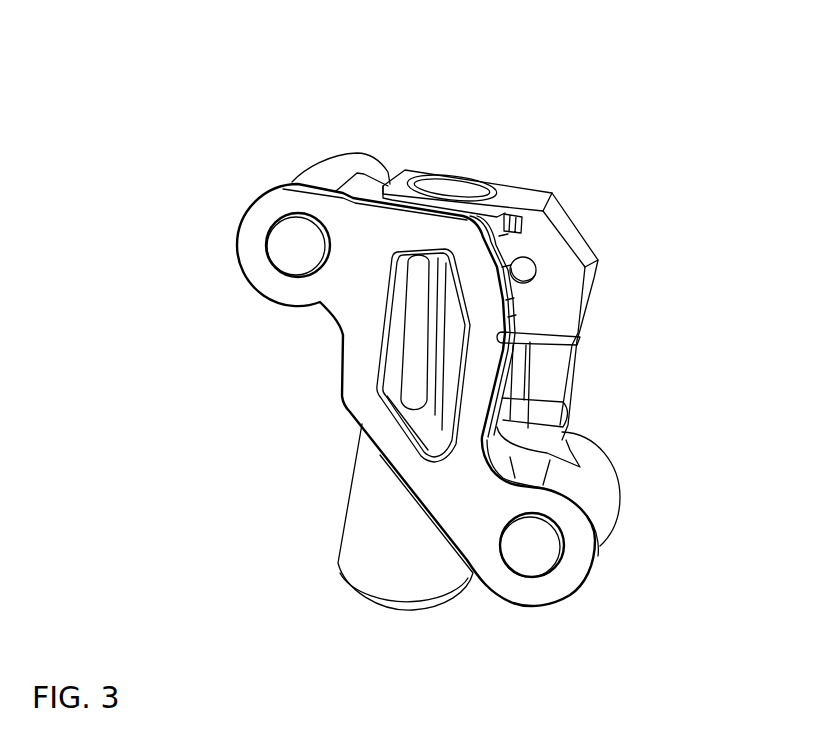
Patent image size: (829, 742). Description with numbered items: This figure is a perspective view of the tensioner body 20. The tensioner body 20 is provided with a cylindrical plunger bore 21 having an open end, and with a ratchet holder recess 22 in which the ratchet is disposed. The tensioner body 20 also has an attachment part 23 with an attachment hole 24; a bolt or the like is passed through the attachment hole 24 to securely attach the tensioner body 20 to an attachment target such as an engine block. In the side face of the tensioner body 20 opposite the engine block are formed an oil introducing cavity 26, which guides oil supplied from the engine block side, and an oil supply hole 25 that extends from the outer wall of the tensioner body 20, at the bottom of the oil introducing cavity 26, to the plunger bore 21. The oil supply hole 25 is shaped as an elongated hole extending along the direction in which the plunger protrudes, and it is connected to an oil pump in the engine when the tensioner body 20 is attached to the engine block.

The tensioner body 20 is at (171, 113).
The plunger bore 21 is at (447, 193).
The ratchet holder recess 22 is at (567, 233).
The attachment part 23 is at (252, 258).
The attachment hole 24 is at (290, 238).
The oil supply hole 25 is at (427, 378).
The oil introducing cavity 26 is at (407, 437).